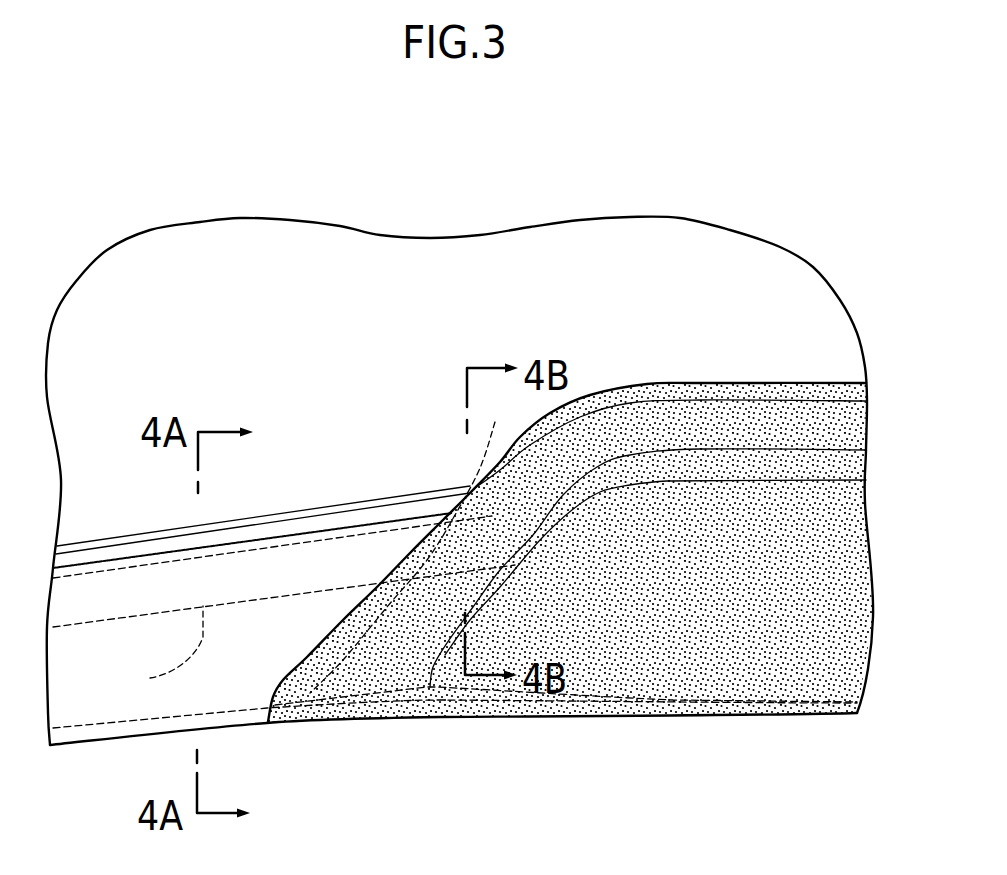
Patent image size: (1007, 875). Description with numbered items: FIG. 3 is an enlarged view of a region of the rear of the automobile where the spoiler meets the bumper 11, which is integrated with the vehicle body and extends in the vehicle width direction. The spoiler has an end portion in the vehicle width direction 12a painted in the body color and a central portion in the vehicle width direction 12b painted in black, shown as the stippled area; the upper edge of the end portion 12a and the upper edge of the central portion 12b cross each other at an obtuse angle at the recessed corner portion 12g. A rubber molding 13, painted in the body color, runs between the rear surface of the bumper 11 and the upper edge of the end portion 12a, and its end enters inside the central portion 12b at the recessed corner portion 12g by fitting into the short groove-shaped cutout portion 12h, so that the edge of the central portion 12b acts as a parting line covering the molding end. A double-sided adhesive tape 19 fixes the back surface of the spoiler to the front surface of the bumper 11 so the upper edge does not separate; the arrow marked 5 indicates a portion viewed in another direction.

The adhesive / joining portion 5 is at (605, 559).
The bumper 11 is at (483, 305).
The end portion in the vehicle width direction 12a is at (338, 496).
The central portion in the vehicle width direction 12b is at (724, 374).
The recessed corner portion 12g is at (469, 493).
The cutout portion 12h is at (413, 545).
The molding 13 is at (143, 534).
The double-sided adhesive tape 19 is at (163, 648).